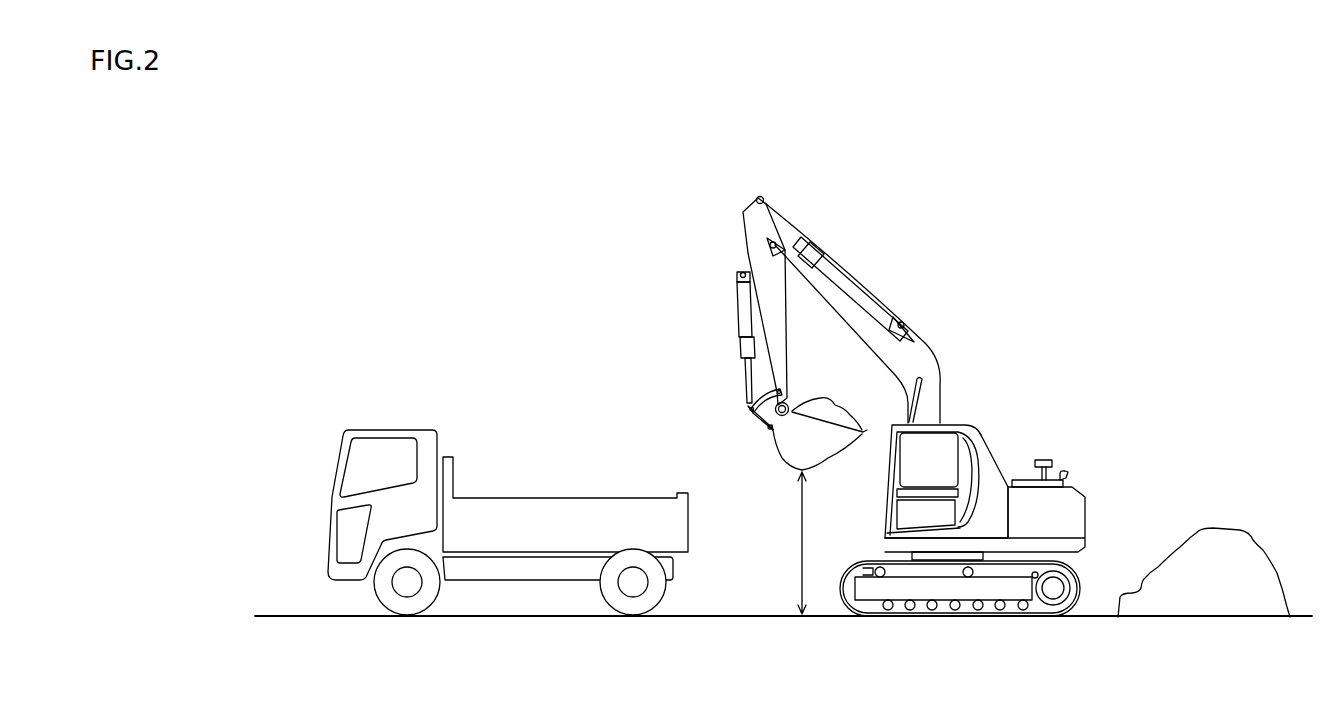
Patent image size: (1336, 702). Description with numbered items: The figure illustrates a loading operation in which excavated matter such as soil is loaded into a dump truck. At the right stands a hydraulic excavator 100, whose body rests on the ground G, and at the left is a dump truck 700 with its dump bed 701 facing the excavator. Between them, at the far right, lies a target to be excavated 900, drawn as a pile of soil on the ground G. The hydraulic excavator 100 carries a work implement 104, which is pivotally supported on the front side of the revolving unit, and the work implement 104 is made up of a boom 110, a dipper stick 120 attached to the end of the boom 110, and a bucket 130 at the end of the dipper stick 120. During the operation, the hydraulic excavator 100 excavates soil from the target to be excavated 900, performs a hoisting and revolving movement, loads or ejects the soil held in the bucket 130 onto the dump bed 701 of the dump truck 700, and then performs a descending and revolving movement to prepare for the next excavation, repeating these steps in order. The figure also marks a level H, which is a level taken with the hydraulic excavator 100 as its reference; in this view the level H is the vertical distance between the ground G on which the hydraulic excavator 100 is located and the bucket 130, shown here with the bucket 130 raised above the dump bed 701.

The hydraulic excavator 100 is at (877, 402).
The work implement 104 is at (804, 333).
The boom 110 is at (850, 300).
The dipper stick 120 is at (755, 228).
The bucket 130 is at (808, 438).
The dump truck 700 is at (508, 483).
The dump bed 701 is at (566, 498).
The target to be excavated 900 is at (1217, 542).
The level H is at (792, 543).
The ground G is at (290, 627).